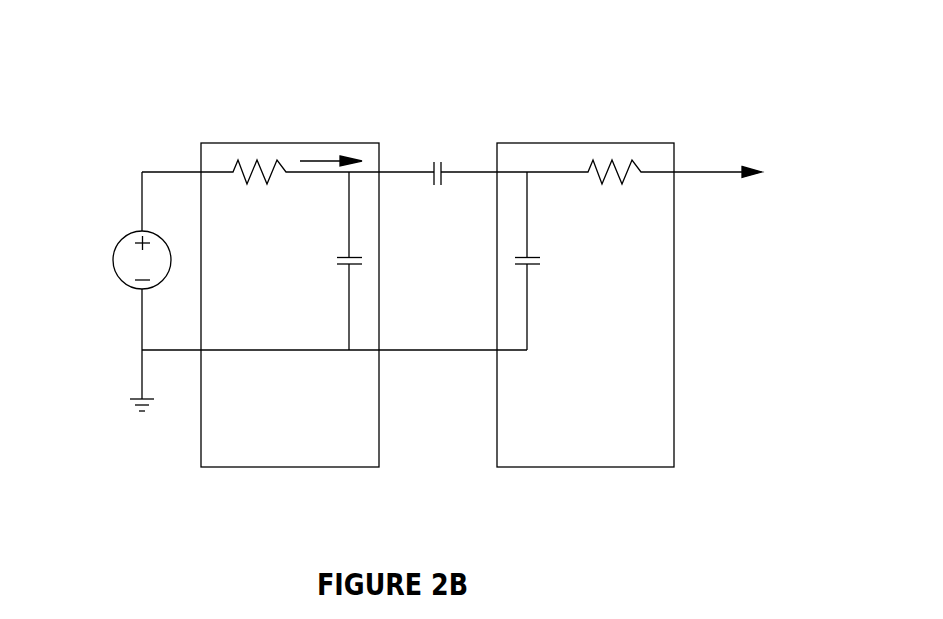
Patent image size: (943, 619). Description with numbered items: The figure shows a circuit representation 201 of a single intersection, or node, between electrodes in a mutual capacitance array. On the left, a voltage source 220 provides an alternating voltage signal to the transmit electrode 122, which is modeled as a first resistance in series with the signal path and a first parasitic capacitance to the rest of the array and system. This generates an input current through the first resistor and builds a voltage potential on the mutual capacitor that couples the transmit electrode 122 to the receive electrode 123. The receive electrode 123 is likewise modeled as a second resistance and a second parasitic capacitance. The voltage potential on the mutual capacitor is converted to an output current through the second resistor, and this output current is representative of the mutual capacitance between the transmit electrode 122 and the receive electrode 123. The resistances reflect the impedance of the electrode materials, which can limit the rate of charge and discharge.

The circuit representation 201 is at (178, 66).
The voltage source 220 is at (132, 231).
The transmit electrode 122 is at (290, 305).
The receive electrode 123 is at (585, 305).